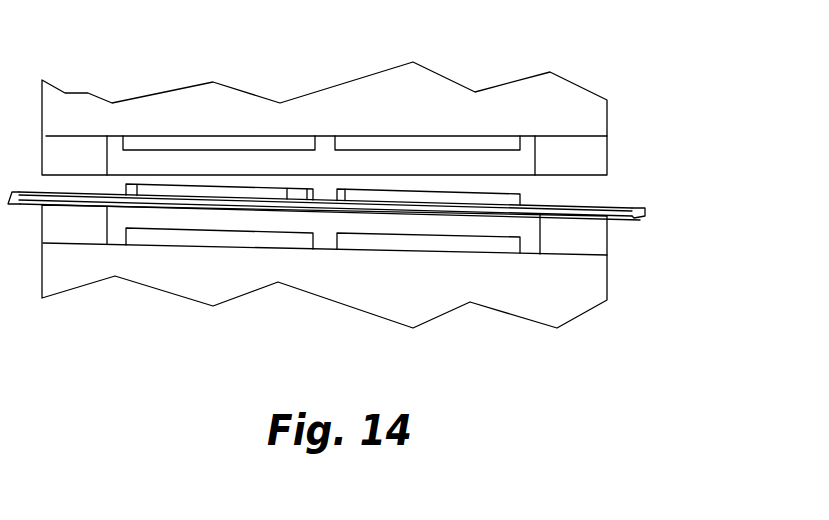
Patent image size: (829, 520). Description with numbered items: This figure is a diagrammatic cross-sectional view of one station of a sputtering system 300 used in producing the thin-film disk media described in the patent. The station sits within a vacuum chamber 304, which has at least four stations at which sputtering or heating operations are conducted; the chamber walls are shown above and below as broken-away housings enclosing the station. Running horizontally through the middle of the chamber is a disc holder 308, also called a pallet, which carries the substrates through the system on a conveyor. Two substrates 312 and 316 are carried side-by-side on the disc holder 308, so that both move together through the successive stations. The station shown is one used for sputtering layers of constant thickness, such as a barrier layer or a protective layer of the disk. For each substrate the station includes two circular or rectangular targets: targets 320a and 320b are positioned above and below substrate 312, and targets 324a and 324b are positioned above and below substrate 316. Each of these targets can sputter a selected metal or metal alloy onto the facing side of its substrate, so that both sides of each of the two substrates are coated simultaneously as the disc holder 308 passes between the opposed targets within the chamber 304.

The sputtering system 300 is at (246, 92).
The vacuum chamber 304 is at (622, 191).
The disc holder 308 is at (615, 221).
The substrate 312 is at (215, 193).
The substrate 316 is at (445, 188).
The target 320a is at (282, 146).
The target 320b is at (190, 240).
The target 324a is at (408, 146).
The target 324b is at (432, 244).